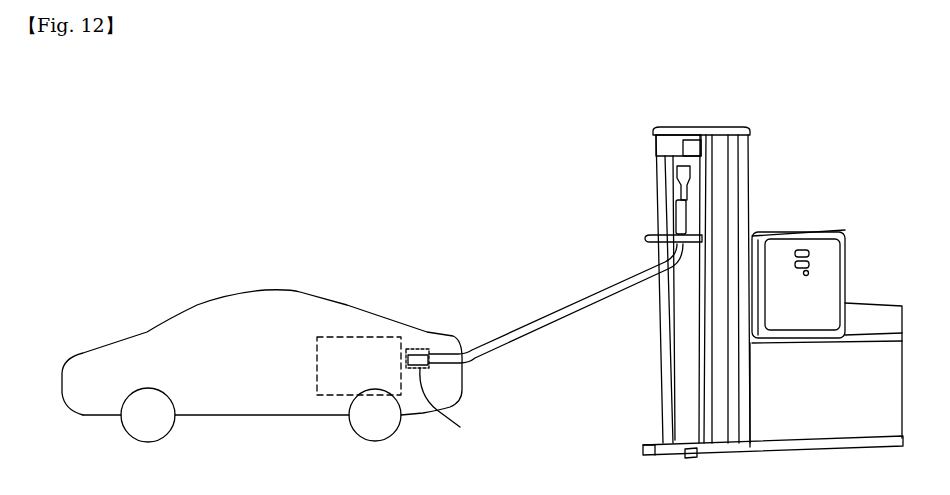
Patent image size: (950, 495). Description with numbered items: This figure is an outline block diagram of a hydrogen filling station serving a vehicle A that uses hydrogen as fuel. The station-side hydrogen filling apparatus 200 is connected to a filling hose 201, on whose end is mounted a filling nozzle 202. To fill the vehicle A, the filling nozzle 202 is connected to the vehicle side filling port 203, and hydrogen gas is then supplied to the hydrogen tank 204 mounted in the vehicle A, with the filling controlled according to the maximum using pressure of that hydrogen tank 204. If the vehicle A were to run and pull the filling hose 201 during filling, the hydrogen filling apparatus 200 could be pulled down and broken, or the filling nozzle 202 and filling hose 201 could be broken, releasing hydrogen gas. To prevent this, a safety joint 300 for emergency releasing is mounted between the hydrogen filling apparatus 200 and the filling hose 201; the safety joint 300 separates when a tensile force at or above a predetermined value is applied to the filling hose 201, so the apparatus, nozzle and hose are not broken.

The vehicle A is at (288, 281).
The hydrogen filling apparatus 200 is at (762, 130).
The filling hose 201 is at (551, 319).
The filling nozzle 202 is at (431, 356).
The vehicle side filling port 203 is at (458, 406).
The hydrogen tank 204 is at (320, 396).
The safety joint 300 is at (675, 180).